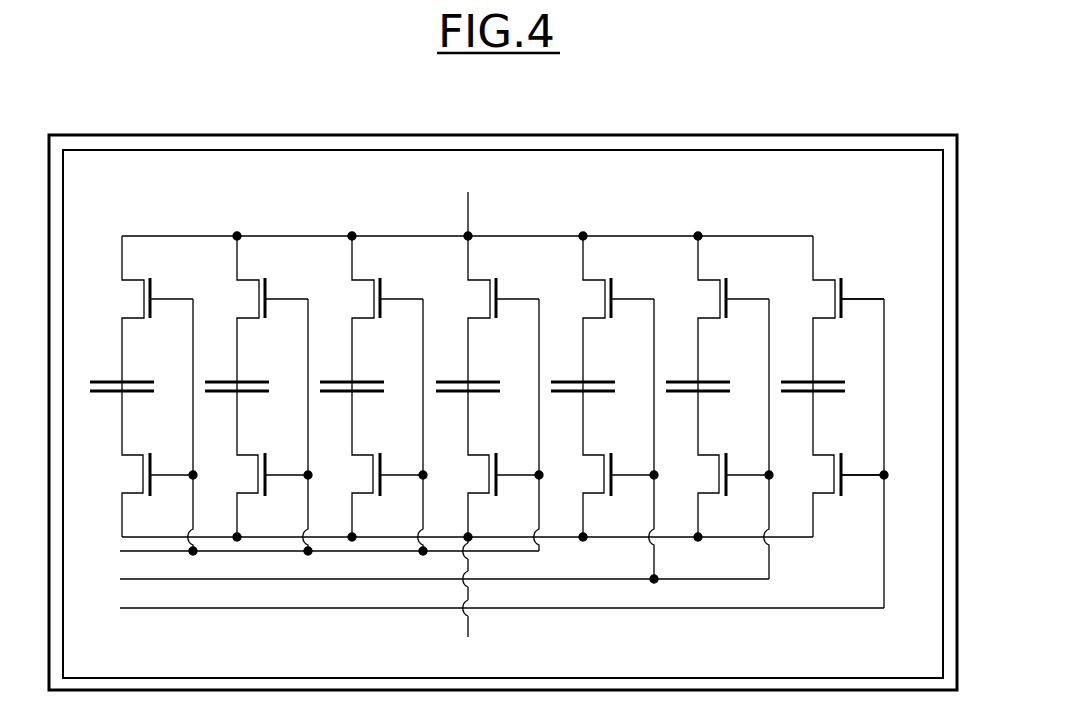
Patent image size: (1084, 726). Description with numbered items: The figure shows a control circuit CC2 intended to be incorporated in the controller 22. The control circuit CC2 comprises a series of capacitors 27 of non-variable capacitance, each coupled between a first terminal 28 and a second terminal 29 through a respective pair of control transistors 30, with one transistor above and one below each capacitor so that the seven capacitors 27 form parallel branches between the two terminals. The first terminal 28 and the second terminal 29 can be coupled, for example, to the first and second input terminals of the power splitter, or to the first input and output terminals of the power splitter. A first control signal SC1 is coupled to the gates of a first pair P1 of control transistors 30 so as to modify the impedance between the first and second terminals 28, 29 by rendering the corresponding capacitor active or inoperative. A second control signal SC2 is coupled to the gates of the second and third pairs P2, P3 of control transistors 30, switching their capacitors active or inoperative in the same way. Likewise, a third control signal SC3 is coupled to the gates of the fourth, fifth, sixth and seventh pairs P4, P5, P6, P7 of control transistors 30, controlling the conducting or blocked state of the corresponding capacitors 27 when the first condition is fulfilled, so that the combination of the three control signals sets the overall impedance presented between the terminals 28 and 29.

The controller 22 is at (501, 130).
The control circuit CC2 is at (388, 143).
The capacitors 27 is at (103, 367).
The first terminal 28 is at (465, 199).
The second terminal 29 is at (459, 601).
The control transistors 30 is at (877, 386).
The first pair of control transistors P1 is at (838, 256).
The second pair of control transistors P2 is at (723, 256).
The third pair of control transistors P3 is at (608, 256).
The fourth pair of control transistors P4 is at (493, 256).
The fifth pair of control transistors P5 is at (377, 256).
The sixth pair of control transistors P6 is at (262, 256).
The seventh pair of control transistors P7 is at (147, 256).
The first control signal SC1 is at (478, 608).
The second control signal SC2 is at (421, 579).
The third control signal SC3 is at (306, 551).